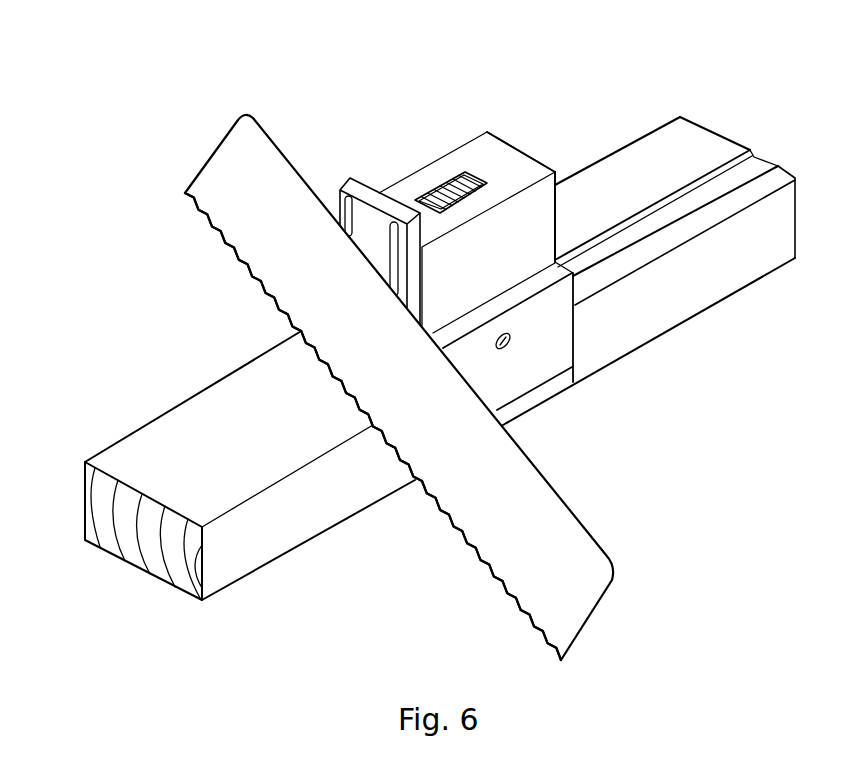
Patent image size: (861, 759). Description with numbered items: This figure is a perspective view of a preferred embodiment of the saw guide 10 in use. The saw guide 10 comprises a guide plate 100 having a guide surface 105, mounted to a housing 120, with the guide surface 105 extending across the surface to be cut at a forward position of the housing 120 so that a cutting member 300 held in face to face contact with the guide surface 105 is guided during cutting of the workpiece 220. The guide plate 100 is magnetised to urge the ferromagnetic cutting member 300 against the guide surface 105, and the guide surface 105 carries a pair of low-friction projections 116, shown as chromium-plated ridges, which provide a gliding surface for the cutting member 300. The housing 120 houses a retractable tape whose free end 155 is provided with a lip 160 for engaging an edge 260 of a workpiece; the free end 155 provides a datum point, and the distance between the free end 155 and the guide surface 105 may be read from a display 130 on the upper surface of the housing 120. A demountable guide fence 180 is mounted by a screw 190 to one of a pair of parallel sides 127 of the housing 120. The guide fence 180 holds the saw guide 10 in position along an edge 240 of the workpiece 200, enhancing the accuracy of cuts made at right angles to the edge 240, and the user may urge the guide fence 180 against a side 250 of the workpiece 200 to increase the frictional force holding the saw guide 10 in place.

The saw guide 10 is at (349, 96).
The guide plate 100 is at (322, 203).
The guide surface 105 is at (379, 387).
The low-friction projections 116 is at (342, 208).
The housing 120 is at (502, 212).
The parallel sides of the housing 127 is at (548, 205).
The display 130 is at (447, 180).
The free end of the tape 155 is at (752, 163).
The lip 160 is at (770, 163).
The guide fence 180 is at (558, 357).
The screw 190 is at (505, 350).
The workpiece 200 is at (210, 465).
The workpiece 220 is at (93, 505).
The edge of the workpiece 240 is at (670, 251).
The side of the workpiece 250 is at (623, 327).
The edge of a workpiece 260 is at (785, 172).
The cutting member 300 is at (238, 228).